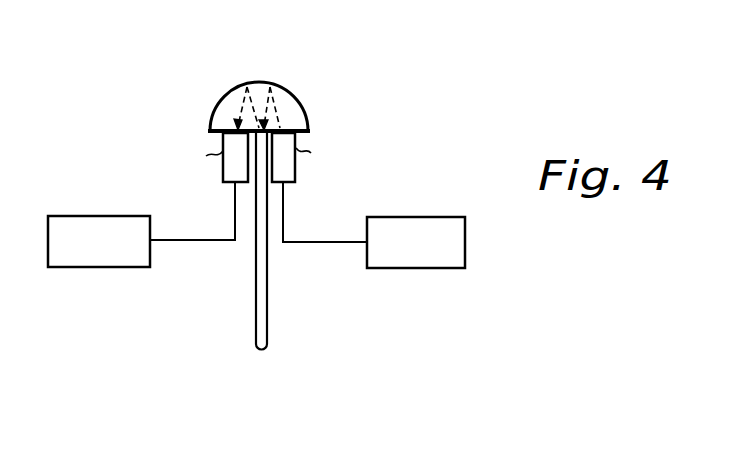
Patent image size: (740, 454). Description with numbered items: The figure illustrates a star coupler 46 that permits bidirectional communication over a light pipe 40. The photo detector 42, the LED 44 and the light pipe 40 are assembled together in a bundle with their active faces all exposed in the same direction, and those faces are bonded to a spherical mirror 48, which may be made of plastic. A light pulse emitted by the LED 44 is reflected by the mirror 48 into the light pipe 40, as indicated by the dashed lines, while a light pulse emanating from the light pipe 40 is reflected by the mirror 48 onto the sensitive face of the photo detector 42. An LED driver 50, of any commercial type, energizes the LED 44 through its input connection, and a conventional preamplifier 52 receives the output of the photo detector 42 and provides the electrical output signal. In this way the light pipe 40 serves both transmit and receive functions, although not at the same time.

The light pipe 40 is at (256, 290).
The photo detector 42 is at (223, 172).
The LED 44 is at (296, 172).
The star coupler 46 is at (438, 143).
The spherical mirror 48 is at (257, 82).
The LED driver 50 is at (393, 268).
The preamplifier 52 is at (103, 268).